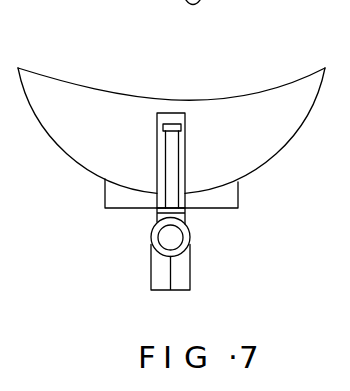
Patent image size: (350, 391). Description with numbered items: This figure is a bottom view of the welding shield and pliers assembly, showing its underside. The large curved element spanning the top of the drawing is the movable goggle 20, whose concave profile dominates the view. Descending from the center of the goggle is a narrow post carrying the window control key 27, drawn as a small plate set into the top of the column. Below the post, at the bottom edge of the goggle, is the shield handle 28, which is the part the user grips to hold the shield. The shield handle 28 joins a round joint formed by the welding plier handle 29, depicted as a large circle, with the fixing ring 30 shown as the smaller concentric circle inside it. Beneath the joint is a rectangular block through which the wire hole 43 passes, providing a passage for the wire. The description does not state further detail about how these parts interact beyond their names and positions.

The movable goggle 20 is at (274, 76).
The window control key 27 is at (173, 123).
The shield handle 28 is at (157, 213).
The welding plier handle 29 is at (154, 231).
The fixing ring 30 is at (190, 242).
The wire hole 43 is at (152, 261).